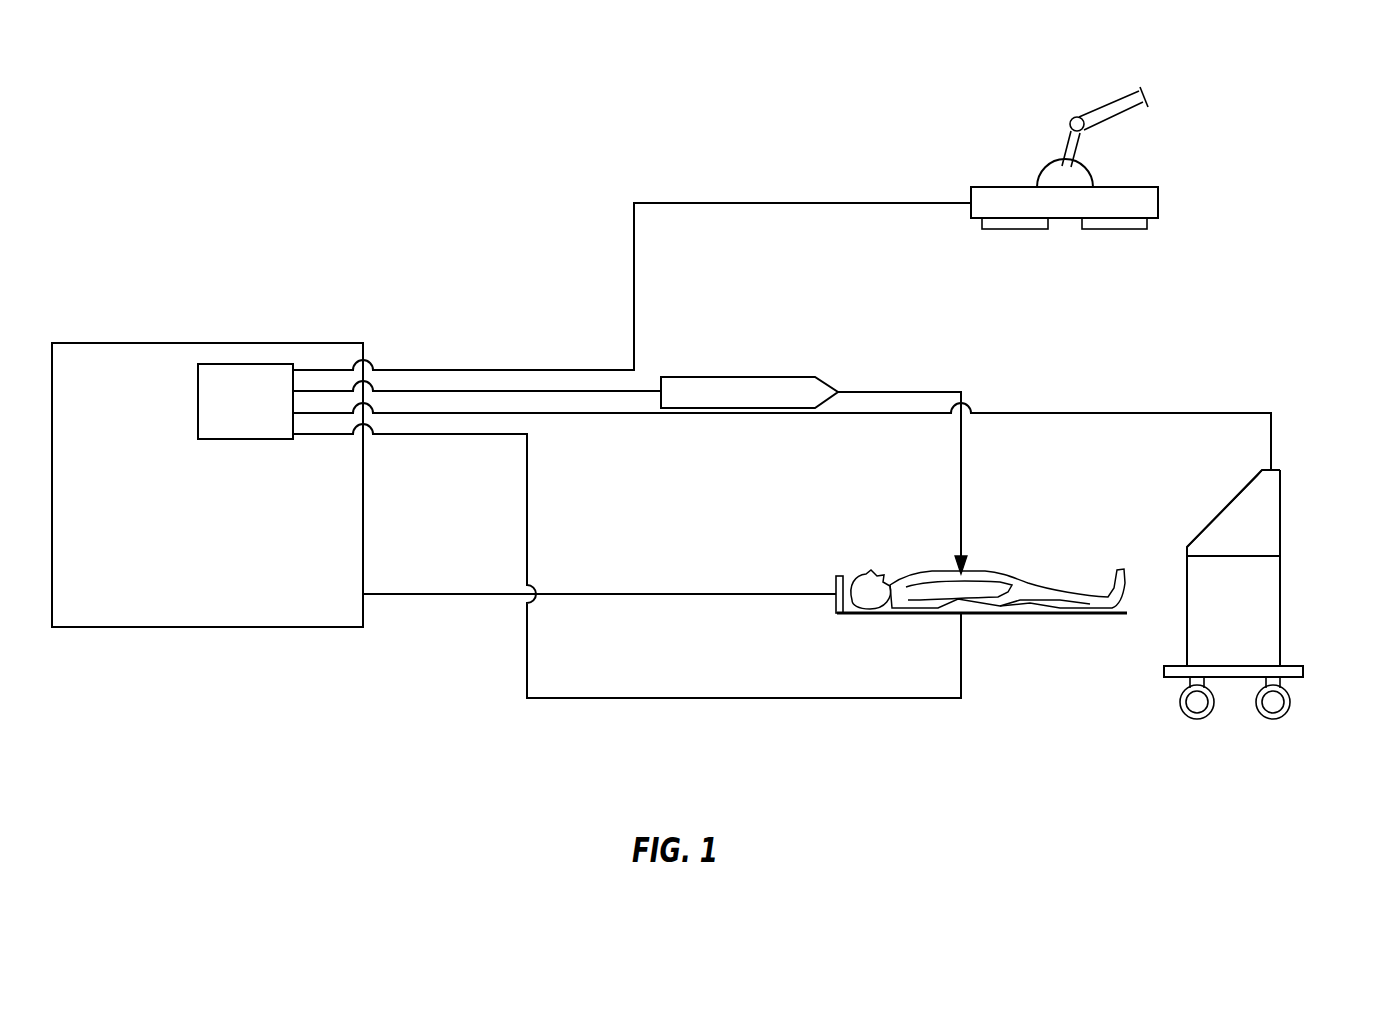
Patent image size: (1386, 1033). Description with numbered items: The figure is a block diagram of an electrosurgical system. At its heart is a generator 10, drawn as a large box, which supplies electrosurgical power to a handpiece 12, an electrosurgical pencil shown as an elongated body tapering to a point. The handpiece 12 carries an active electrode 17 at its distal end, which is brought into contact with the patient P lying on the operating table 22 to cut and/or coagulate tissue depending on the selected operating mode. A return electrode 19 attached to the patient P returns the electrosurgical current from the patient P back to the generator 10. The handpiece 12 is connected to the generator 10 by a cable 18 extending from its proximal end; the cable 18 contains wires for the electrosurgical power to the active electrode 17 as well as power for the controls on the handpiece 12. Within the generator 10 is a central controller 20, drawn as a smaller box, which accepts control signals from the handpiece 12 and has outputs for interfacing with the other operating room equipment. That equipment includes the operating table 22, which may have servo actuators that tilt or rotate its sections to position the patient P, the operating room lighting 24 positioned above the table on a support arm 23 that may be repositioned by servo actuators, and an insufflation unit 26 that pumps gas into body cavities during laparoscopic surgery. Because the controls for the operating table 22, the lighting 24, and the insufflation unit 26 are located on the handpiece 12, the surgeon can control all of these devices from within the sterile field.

The generator 10 is at (81, 343).
The handpiece 12 is at (733, 377).
The active electrode 17 is at (955, 562).
The cable 18 is at (508, 391).
The return electrode 19 is at (832, 582).
The central controller 20 is at (238, 364).
The operating table 22 is at (1038, 615).
The support arm 23 is at (1118, 100).
The operating room lighting 24 is at (1048, 170).
The insufflation unit 26 is at (1294, 566).
The patient P is at (1052, 566).